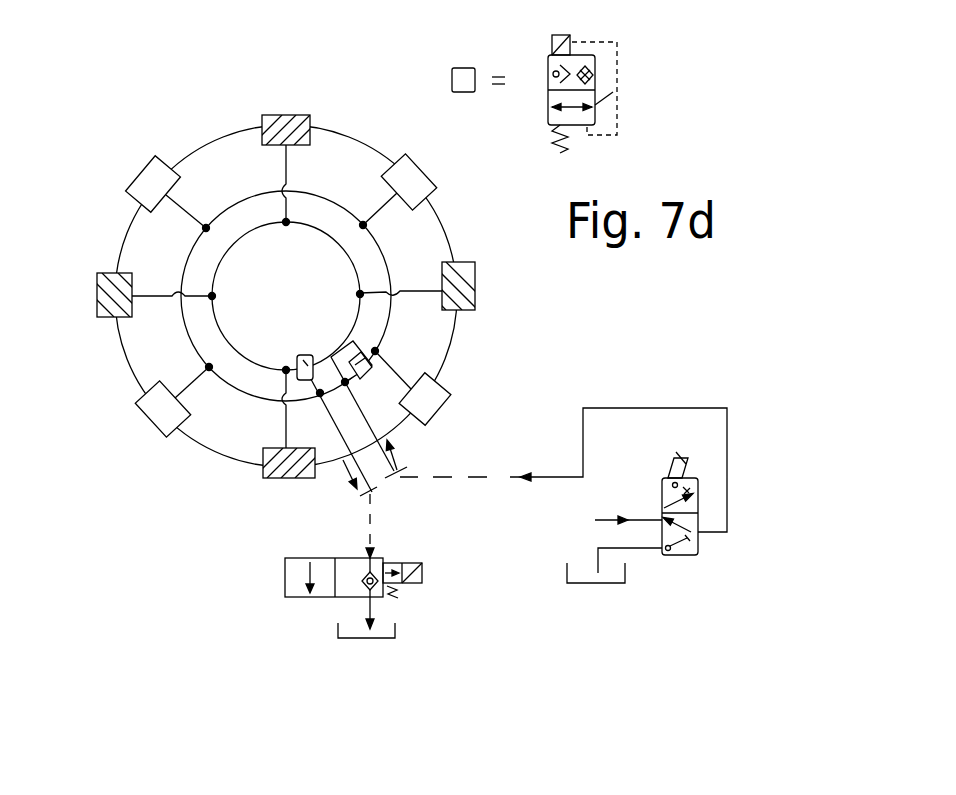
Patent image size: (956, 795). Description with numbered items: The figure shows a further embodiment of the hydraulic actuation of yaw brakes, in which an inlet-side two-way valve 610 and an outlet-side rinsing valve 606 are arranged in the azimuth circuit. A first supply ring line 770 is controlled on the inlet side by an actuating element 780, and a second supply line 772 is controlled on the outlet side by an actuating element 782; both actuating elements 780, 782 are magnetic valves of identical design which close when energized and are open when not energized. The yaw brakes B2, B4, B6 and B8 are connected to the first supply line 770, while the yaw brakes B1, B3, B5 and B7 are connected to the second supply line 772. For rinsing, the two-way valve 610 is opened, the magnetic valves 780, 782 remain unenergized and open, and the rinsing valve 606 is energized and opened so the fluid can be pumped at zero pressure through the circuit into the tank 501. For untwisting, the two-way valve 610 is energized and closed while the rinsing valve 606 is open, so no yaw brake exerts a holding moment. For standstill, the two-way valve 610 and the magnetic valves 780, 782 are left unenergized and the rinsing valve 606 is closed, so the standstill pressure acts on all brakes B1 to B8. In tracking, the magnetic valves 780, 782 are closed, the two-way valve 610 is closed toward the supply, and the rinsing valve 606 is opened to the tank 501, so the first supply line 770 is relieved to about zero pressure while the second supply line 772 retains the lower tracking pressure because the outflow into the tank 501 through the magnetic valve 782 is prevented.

The yaw brake B1 is at (283, 480).
The yaw brake B2 is at (430, 400).
The yaw brake B3 is at (463, 285).
The yaw brake B4 is at (413, 182).
The yaw brake B5 is at (283, 112).
The yaw brake B6 is at (147, 180).
The yaw brake B7 is at (100, 288).
The yaw brake B8 is at (160, 413).
The first supply ring line 770 is at (390, 318).
The second supply line 772 is at (212, 328).
The actuating element 780 is at (353, 342).
The actuating element 782 is at (300, 356).
The rinsing valve 606 is at (298, 560).
The two-way valve 610 is at (680, 557).
The tank 501 is at (370, 640).